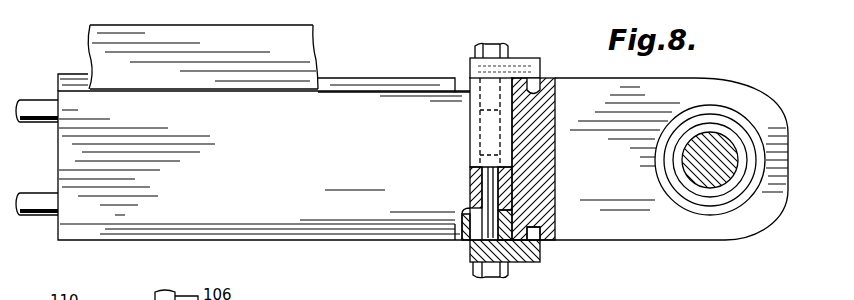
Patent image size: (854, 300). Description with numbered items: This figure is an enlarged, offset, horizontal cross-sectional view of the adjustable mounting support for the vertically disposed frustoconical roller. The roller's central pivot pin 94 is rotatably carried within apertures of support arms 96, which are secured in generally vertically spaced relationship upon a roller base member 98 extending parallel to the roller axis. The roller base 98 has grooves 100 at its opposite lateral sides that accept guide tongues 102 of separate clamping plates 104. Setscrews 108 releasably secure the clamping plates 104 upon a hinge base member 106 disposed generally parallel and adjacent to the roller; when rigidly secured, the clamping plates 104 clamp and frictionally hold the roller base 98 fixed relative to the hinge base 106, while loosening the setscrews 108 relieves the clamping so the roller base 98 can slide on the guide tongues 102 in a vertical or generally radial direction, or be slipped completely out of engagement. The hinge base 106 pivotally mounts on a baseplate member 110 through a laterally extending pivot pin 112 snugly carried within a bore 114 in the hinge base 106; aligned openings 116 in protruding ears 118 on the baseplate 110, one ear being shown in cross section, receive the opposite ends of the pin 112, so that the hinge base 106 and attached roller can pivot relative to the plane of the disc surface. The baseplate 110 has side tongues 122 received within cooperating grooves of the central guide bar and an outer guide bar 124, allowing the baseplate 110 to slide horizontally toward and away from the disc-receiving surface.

The central pivot pin 94 is at (692, 171).
The support arms 96 is at (762, 207).
The roller base member 98 is at (548, 151).
The grooves 100 is at (558, 101).
The guide tongues 102 is at (538, 86).
The clamping plates 104 is at (520, 58).
The hinge base member 106 is at (488, 131).
The setscrews 108 is at (478, 46).
The baseplate member 110 is at (402, 157).
The pivot pin 112 is at (495, 179).
The bore 114 is at (482, 177).
The aligned openings 116 is at (474, 212).
The protruding ears 118 is at (514, 218).
The side tongues 122 is at (355, 78).
The outer guide bar 124 is at (92, 50).